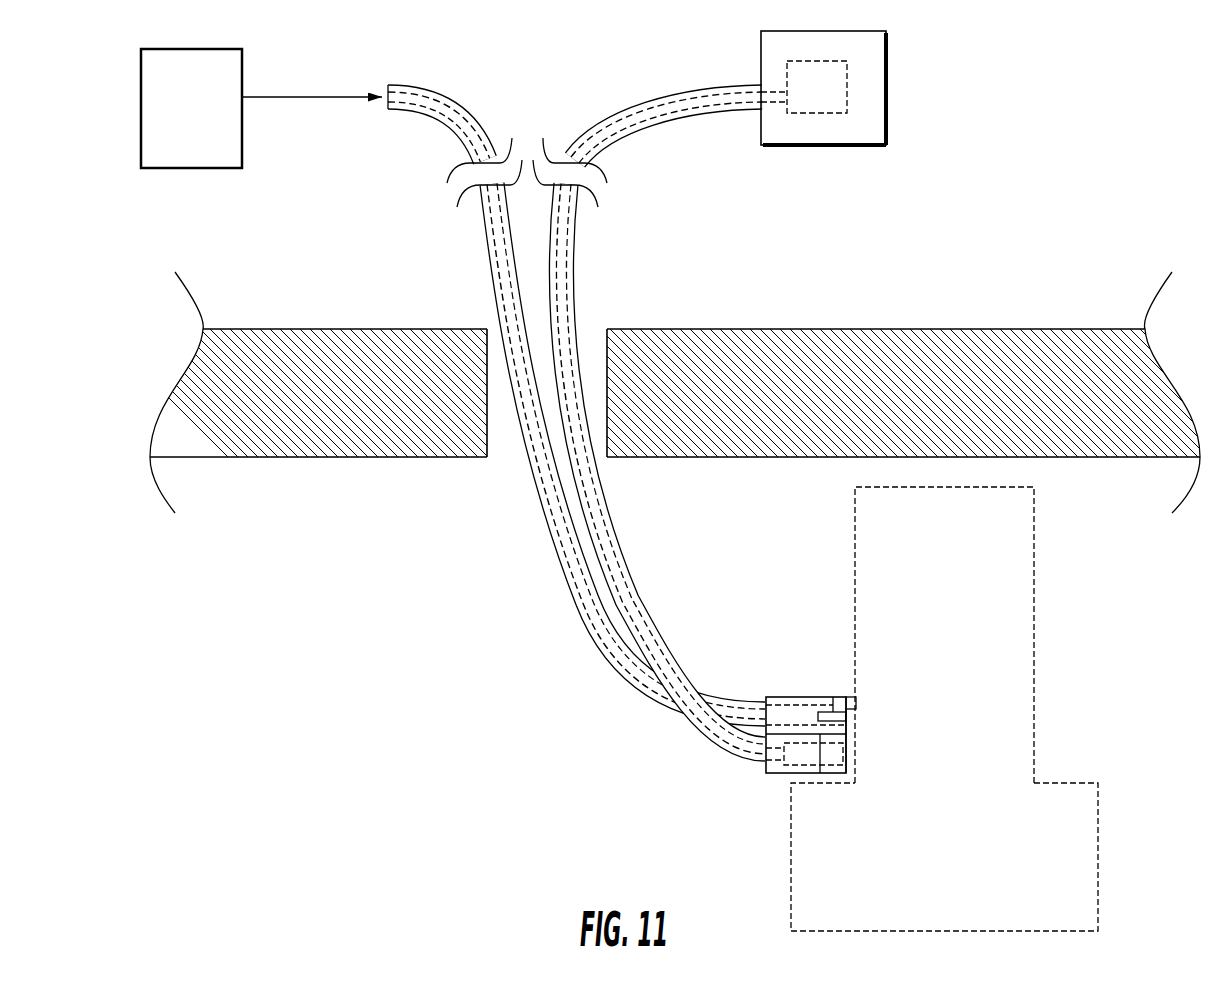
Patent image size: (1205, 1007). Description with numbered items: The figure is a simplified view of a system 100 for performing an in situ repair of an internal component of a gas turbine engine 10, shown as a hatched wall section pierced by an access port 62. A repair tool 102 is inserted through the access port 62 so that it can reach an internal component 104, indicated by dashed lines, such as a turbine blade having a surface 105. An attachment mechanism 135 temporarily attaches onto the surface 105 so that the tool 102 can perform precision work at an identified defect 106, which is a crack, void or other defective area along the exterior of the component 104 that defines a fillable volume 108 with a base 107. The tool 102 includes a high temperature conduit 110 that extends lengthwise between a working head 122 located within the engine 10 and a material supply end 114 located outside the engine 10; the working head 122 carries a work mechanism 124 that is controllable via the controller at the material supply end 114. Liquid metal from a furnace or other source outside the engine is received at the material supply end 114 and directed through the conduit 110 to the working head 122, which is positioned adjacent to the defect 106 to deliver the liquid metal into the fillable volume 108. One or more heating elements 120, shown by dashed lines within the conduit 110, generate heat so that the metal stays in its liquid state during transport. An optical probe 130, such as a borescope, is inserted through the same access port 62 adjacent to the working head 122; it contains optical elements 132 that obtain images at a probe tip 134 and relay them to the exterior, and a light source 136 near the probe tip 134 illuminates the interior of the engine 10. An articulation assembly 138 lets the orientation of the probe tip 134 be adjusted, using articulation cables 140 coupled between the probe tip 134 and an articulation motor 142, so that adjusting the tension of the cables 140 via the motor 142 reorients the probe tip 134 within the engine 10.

The gas turbine engine 10 is at (1050, 327).
The access port 62 is at (608, 355).
The system 100 is at (1037, 148).
The repair tool 102 is at (525, 643).
The internal component 104 is at (1084, 653).
The surface 105 is at (853, 571).
The defect 106 is at (857, 740).
The base 107 is at (858, 775).
The fillable volume 108 is at (868, 754).
The high temperature conduit 110 is at (620, 680).
The material supply end 114 is at (141, 105).
The heating element 120 is at (657, 710).
The working head 122 is at (773, 773).
The work mechanism 124 is at (790, 767).
The optical probe 130 is at (815, 697).
The optical elements 132 is at (792, 703).
The probe tip 134 is at (846, 720).
The attachment mechanism 135 is at (851, 697).
The light source 136 is at (843, 697).
The articulation assembly 138 is at (785, 65).
The articulation cables 140 is at (620, 113).
The articulation motor 142 is at (813, 114).